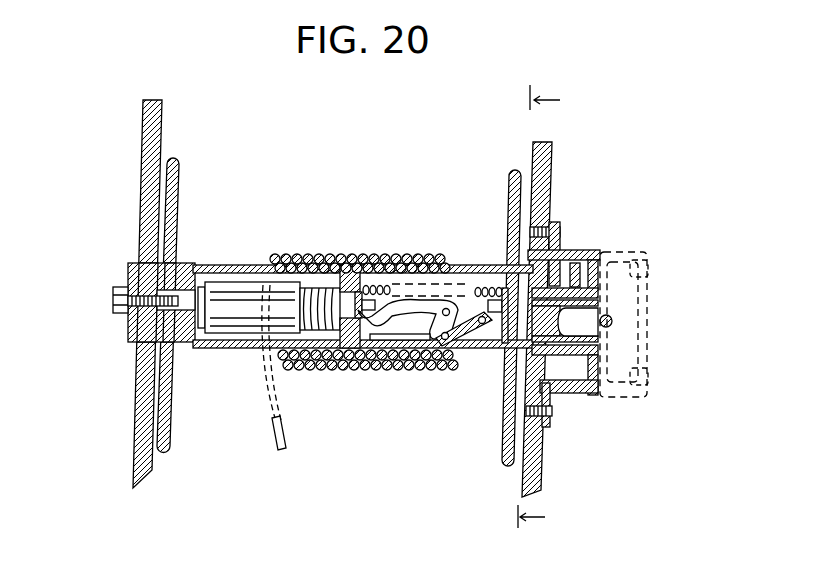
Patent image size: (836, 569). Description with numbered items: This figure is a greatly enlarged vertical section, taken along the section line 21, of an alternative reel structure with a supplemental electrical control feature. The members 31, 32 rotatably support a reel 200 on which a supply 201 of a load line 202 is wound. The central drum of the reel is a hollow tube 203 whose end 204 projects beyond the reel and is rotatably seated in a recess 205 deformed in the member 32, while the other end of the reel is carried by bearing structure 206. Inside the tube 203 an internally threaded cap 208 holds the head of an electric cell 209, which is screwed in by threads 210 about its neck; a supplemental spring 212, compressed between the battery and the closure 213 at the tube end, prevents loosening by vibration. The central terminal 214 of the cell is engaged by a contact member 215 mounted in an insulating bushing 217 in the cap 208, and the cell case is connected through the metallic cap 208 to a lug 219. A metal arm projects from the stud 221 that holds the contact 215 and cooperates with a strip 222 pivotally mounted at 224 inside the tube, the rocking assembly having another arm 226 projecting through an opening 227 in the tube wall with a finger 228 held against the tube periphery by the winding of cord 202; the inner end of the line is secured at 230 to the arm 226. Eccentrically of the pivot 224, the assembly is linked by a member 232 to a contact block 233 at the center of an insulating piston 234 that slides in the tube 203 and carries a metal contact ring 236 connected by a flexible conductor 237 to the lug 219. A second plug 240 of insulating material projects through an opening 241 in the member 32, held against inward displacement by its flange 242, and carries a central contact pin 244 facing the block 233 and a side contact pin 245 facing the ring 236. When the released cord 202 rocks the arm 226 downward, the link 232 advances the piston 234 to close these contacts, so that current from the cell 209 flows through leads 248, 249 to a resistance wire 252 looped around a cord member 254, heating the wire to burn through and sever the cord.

The section line 21 is at (524, 307).
The support member 31 is at (163, 125).
The support member 32 is at (553, 152).
The reel 200 is at (180, 192).
The supply of load line 201 is at (400, 260).
The load line 202 is at (272, 435).
The central tube 203 is at (222, 266).
The projecting end of tube 204 is at (548, 265).
The recess 205 is at (572, 287).
The bearing structure 206 is at (114, 305).
The internally threaded cap 208 is at (310, 350).
The electric cell 209 is at (233, 317).
The threads 210 is at (300, 258).
The supplemental spring 212 is at (200, 276).
The closure 213 is at (172, 270).
The central terminal 214 is at (334, 256).
The contact member 215 is at (360, 256).
The insulating bushing 217 is at (345, 368).
The pin or lug 219 is at (374, 284).
The stud 221 is at (362, 372).
The arm or strip 222 is at (416, 292).
The pivot 224 is at (446, 308).
The arm 226 is at (412, 370).
The opening 227 is at (462, 352).
The extension or finger 228 is at (362, 375).
The line attachment point 230 is at (372, 372).
The link member 232 is at (456, 355).
The contact block 233 is at (468, 330).
The piston 234 is at (505, 288).
The contact ring 236 is at (506, 355).
The flexible conductor 237 is at (478, 274).
The piston or plug 240 is at (580, 395).
The opening 241 is at (555, 400).
The flange 242 is at (598, 296).
The central contact pin 244 is at (600, 330).
The side contact pin 245 is at (530, 262).
The lead 248 is at (616, 380).
The lead 249 is at (603, 300).
The resistance wire 252 is at (612, 315).
The cord member 254 is at (612, 319).